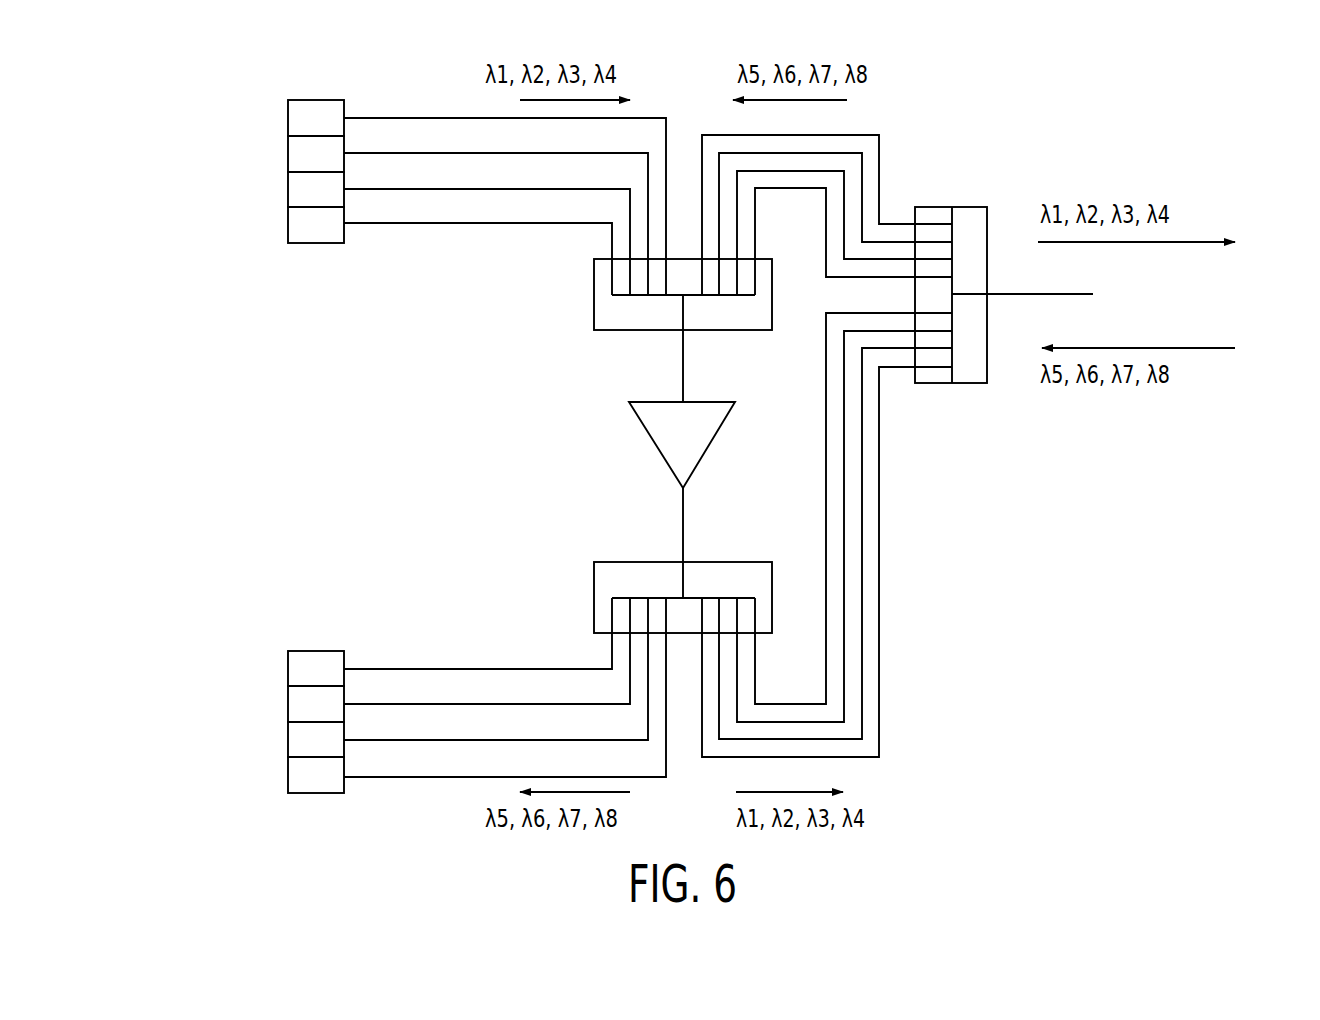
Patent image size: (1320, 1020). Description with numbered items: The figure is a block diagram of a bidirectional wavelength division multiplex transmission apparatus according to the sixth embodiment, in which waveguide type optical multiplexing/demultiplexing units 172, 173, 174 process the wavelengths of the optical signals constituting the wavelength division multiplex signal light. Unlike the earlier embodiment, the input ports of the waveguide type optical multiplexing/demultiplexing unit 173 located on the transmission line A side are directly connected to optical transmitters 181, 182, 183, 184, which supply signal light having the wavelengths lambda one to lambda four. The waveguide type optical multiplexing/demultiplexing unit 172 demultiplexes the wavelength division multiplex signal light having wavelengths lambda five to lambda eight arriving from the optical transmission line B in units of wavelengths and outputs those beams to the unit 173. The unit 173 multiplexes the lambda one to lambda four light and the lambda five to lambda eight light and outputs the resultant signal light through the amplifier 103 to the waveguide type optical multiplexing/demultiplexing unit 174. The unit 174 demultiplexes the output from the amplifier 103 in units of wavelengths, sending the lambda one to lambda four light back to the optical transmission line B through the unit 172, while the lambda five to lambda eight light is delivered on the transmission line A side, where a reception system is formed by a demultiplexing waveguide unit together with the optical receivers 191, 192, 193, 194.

The optical transmitter 181 is at (288, 124).
The optical transmitter 182 is at (288, 159).
The optical transmitter 183 is at (288, 194).
The optical transmitter 184 is at (288, 229).
The optical receiver 191 is at (288, 674).
The optical receiver 192 is at (288, 711).
The optical receiver 193 is at (288, 747).
The optical receiver 194 is at (288, 783).
The waveguide type optical multiplexing/demultiplexing unit 172 is at (943, 206).
The waveguide type optical multiplexing/demultiplexing unit 173 is at (594, 306).
The waveguide type optical multiplexing/demultiplexing unit 174 is at (632, 562).
The amplifier 103 is at (717, 438).
The optical transmission line B is at (1052, 294).